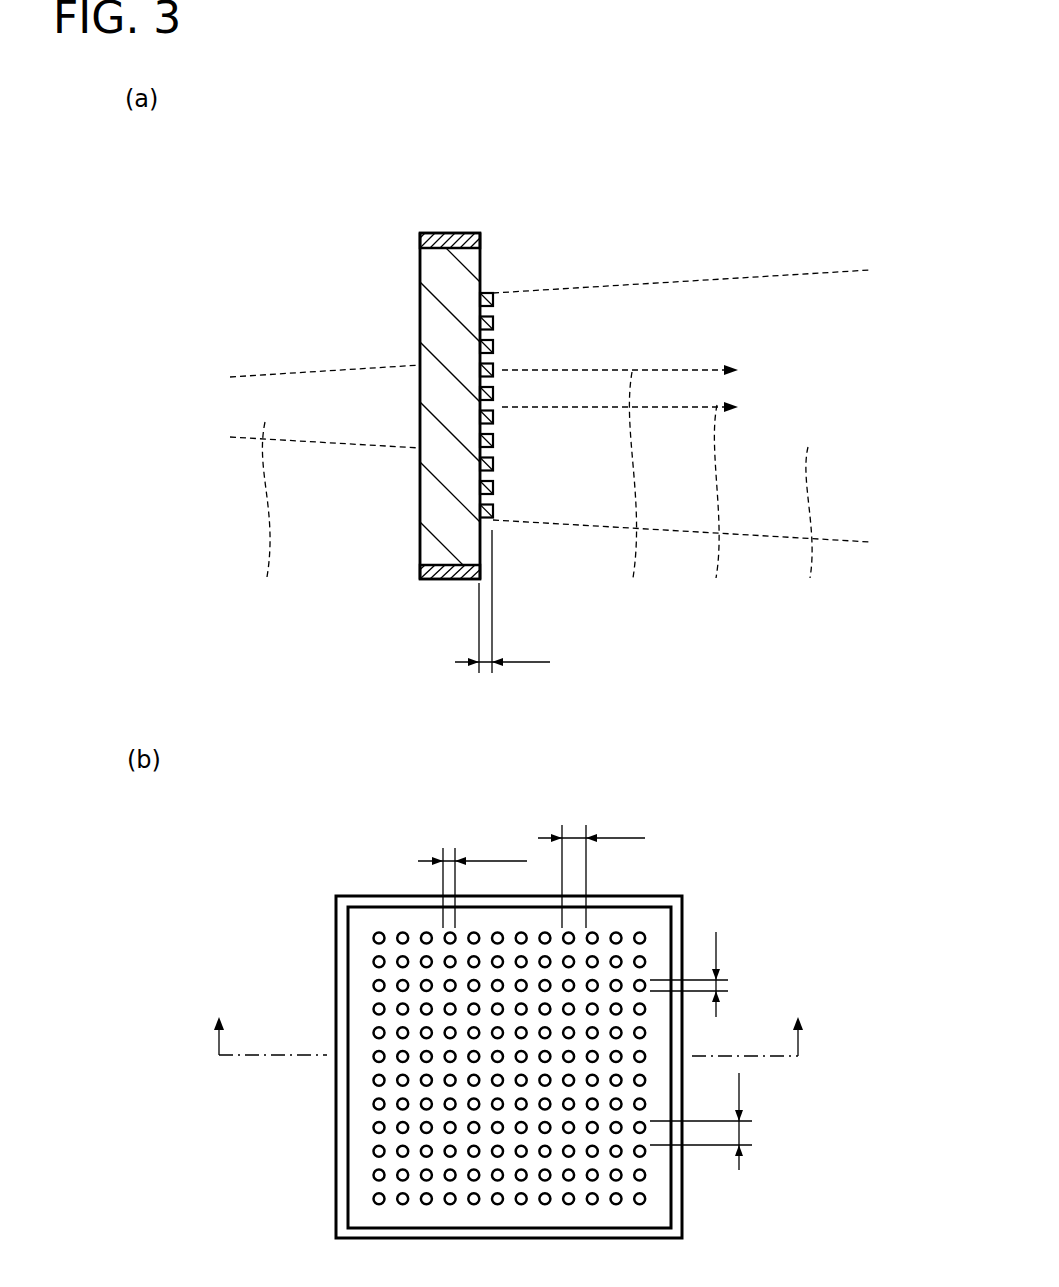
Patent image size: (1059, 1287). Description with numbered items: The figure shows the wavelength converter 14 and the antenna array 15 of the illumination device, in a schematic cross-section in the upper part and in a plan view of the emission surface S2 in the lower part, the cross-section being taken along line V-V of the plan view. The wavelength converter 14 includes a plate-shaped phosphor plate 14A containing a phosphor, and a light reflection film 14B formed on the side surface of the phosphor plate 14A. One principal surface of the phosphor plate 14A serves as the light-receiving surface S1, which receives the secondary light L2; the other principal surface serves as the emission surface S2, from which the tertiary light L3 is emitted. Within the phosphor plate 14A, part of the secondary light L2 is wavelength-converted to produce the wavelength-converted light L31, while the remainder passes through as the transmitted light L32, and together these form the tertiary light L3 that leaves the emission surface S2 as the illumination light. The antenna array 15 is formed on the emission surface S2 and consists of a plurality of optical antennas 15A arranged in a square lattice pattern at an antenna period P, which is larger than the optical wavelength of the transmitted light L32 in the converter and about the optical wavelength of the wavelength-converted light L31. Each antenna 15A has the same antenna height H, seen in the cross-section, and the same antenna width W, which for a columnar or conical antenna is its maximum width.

The wavelength converter 14 is at (462, 724).
The phosphor plate 14A is at (420, 272).
The light reflection film 14B is at (420, 242).
The antenna array 15 is at (449, 698).
The optical antenna 15A is at (494, 297).
The light-receiving surface S1 is at (420, 540).
The emission surface S2 is at (480, 540).
The secondary light L2 is at (268, 516).
The wavelength-converted light L31 is at (636, 492).
The transmitted light L32 is at (718, 508).
The tertiary light L3 is at (810, 529).
The antenna height H is at (502, 601).
The antenna width W is at (589, 924).
The antenna period P is at (654, 989).
The line V- V is at (510, 1036).